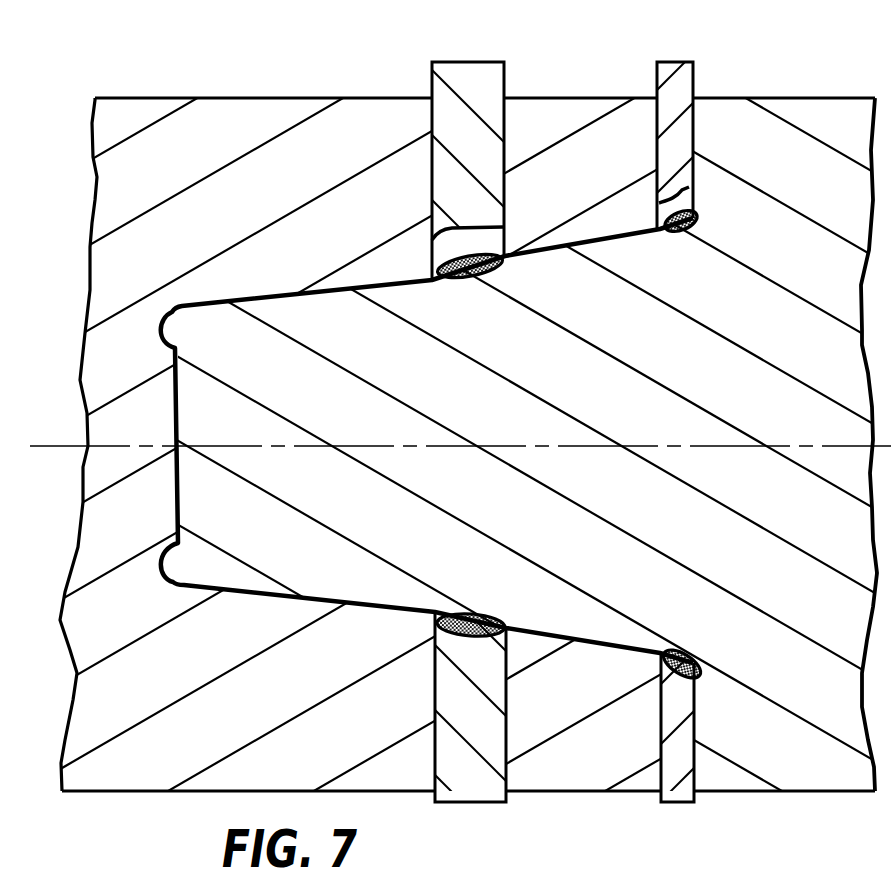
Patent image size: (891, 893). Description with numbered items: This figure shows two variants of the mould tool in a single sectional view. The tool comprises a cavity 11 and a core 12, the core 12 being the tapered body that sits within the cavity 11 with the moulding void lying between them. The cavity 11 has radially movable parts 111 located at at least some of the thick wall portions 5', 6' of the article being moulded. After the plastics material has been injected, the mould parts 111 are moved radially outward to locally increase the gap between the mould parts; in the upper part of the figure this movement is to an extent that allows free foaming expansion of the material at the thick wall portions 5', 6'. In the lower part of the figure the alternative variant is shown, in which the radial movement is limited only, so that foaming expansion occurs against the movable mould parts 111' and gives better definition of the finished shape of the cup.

The cavity 11 is at (465, 446).
The core 12 is at (520, 446).
The radially movable parts 111 is at (560, 148).
The movable mould parts 111' is at (562, 725).
The thick wall portion 5' is at (421, 158).
The thick wall portion 6' is at (738, 134).